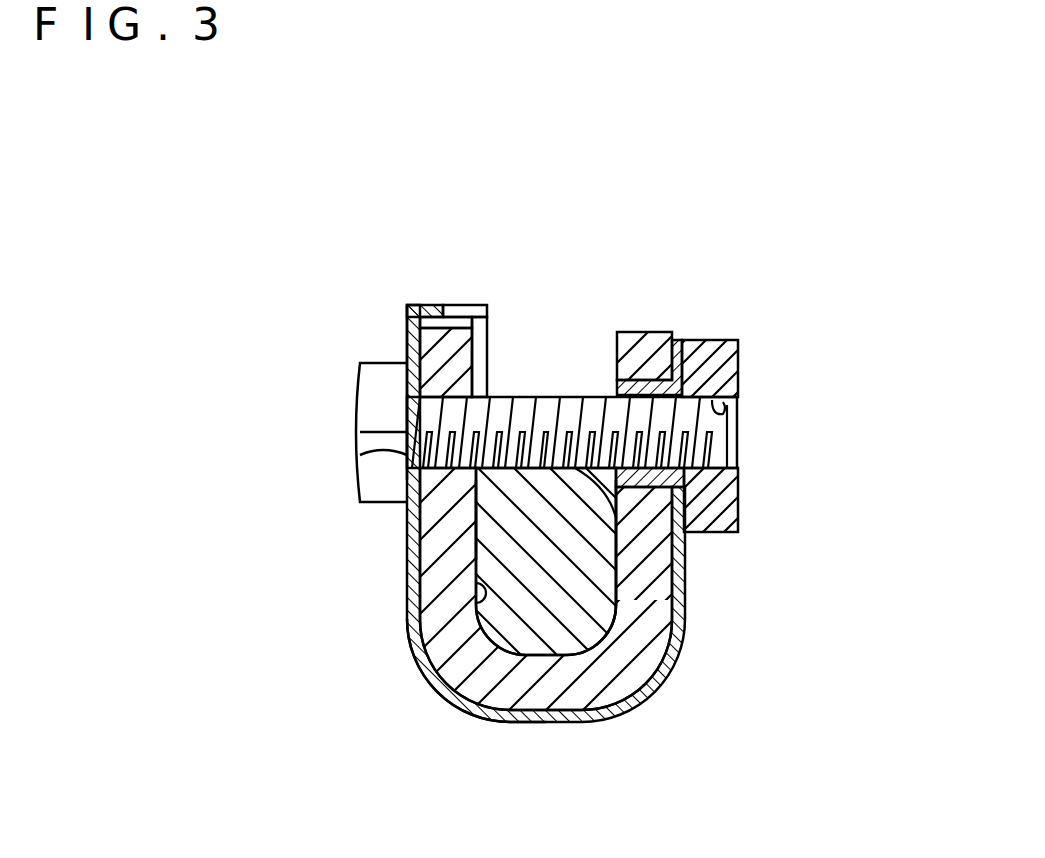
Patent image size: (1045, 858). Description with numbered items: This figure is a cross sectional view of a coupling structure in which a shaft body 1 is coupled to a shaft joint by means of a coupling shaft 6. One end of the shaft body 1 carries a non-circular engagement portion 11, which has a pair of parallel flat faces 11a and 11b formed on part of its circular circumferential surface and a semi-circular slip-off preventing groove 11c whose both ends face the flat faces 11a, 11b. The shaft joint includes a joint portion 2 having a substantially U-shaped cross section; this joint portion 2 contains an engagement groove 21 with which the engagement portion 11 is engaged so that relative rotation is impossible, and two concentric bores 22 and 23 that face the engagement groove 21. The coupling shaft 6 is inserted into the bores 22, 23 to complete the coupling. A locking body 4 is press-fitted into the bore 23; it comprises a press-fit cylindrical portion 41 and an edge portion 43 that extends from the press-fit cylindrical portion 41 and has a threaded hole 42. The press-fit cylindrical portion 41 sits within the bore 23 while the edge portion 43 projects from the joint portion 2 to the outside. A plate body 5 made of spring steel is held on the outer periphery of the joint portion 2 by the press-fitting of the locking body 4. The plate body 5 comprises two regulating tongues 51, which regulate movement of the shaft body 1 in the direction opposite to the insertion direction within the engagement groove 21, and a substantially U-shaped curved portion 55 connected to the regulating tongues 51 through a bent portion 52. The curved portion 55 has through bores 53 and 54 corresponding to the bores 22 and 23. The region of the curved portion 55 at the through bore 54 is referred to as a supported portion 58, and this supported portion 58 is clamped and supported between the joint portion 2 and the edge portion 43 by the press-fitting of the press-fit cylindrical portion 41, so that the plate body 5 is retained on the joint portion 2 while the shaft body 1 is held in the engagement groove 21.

The shaft body 1 is at (544, 471).
The joint portion 2 is at (503, 471).
The locking body 4 is at (760, 407).
The plate body 5 is at (500, 548).
The coupling shaft 6 is at (320, 431).
The engagement portion 11 is at (544, 571).
The flat face 11a is at (618, 593).
The flat face 11b is at (475, 557).
The slip-off preventing groove 11c is at (618, 523).
The engagement groove 21 is at (478, 585).
The bore 22 is at (408, 410).
The bore 23 is at (645, 378).
The press-fit cylindrical portion 41 is at (651, 315).
The threaded hole 42 is at (740, 423).
The edge portion 43 is at (697, 340).
The regulating tongue 51 is at (482, 370).
The bent portion 52 is at (458, 305).
The through bore 53 is at (360, 453).
The through bore 54 is at (712, 378).
The curved portion 55 is at (480, 712).
The supported portion 58 is at (740, 513).